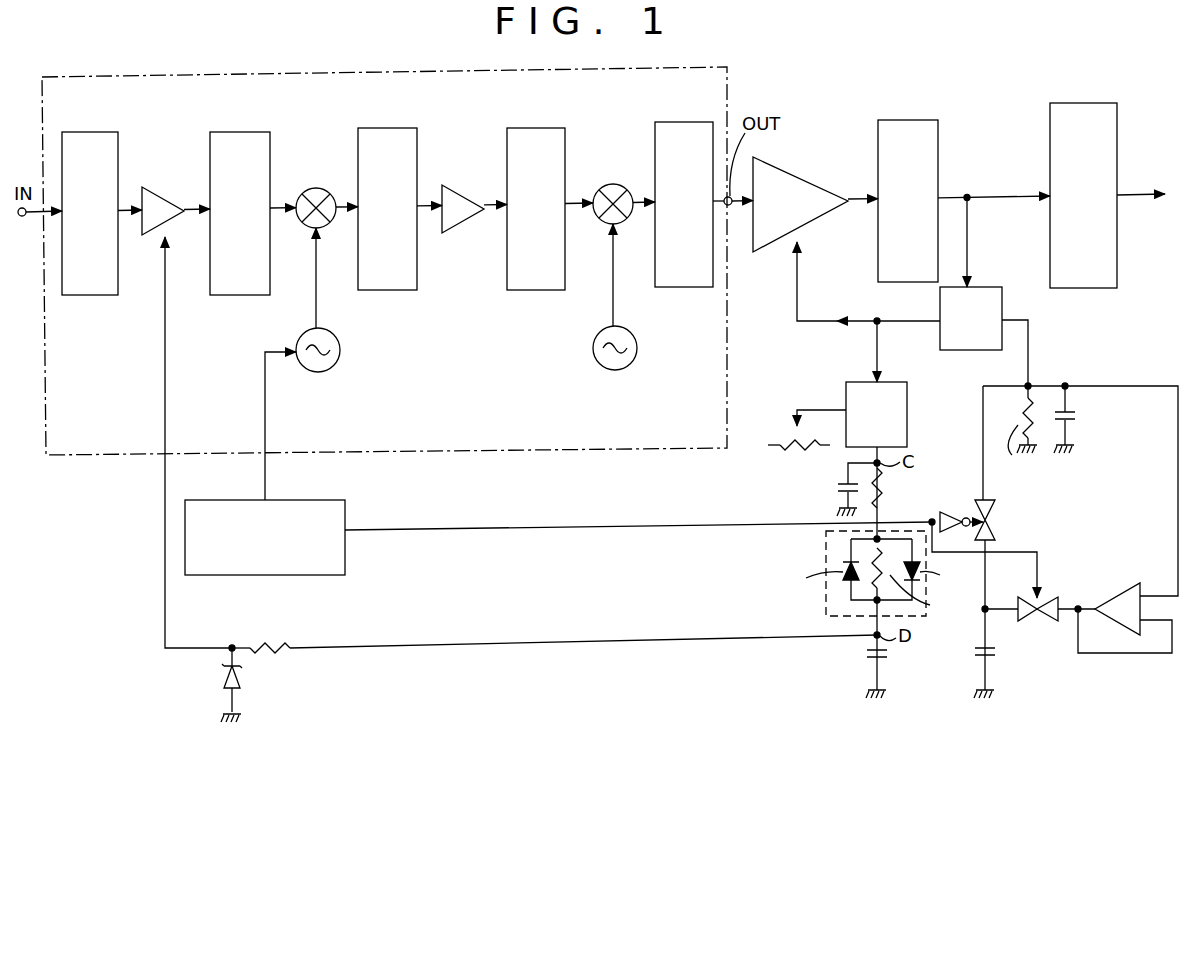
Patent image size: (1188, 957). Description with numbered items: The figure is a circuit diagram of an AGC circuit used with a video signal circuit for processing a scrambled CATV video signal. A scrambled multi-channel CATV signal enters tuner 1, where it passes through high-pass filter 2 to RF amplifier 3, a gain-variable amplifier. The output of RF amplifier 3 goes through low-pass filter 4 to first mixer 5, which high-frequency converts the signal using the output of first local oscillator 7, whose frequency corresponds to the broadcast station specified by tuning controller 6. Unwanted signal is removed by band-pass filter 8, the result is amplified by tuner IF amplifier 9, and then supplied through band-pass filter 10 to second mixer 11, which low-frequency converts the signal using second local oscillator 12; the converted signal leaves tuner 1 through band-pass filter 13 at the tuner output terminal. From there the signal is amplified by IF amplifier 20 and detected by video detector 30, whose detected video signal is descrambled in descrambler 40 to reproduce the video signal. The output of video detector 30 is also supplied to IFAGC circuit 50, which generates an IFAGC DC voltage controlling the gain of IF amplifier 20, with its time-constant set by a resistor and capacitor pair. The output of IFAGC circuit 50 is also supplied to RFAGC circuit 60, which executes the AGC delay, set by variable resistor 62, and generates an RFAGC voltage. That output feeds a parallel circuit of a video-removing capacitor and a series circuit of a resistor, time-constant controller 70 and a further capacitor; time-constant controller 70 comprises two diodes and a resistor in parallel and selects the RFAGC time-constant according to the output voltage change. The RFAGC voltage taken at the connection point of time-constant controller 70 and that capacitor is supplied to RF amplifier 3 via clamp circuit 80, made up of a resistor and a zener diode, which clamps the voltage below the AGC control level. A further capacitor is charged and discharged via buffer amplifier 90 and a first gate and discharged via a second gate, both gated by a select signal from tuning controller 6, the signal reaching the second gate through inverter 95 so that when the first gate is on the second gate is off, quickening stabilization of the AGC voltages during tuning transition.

The tuner 1 is at (146, 75).
The high-pass filter 2 is at (82, 131).
The RF amplifier 3 is at (170, 231).
The low-pass filter 4 is at (238, 131).
The first mixer 5 is at (322, 226).
The tuning controller 6 is at (345, 514).
The first local oscillator 7 is at (340, 348).
The band-pass filter 8 is at (402, 127).
The tuner IF amplifier 9 is at (468, 228).
The band-pass filter 10 is at (553, 127).
The second mixer 11 is at (622, 222).
The second local oscillator 12 is at (637, 346).
The band-pass filter 13 is at (694, 121).
The IF amplifier 20 is at (822, 180).
The video detector 30 is at (928, 118).
The descrambler 40 is at (1100, 102).
The IFAGC circuit 50 is at (1002, 310).
The RFAGC circuit 60 is at (908, 408).
The variable resistor 62 is at (790, 435).
The time-constant controller 70 is at (876, 597).
The clamp circuit 80 is at (533, 667).
The buffer amplifier 90 is at (1120, 592).
The inverter 95 is at (958, 526).